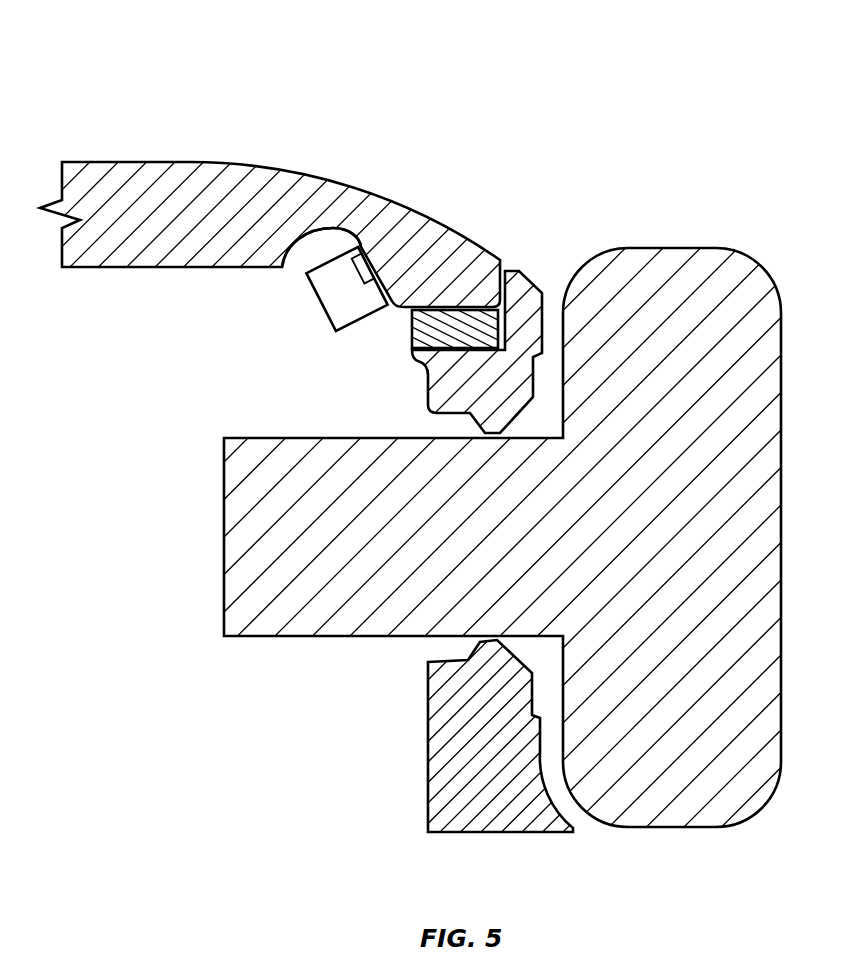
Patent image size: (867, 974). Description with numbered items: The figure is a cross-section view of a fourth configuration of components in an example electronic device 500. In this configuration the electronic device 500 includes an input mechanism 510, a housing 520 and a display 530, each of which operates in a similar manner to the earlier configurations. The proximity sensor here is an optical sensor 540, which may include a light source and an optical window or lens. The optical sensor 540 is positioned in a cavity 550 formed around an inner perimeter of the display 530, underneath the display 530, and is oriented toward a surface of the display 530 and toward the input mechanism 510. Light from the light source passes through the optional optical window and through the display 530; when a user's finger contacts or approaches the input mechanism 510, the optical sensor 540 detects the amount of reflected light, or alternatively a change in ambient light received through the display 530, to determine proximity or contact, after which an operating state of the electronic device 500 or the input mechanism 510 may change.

The electronic device 500 is at (57, 82).
The input mechanism 510 is at (664, 248).
The housing 520 is at (547, 835).
The display 530 is at (146, 162).
The optical sensor 540 is at (317, 296).
The cavity 550 is at (312, 245).